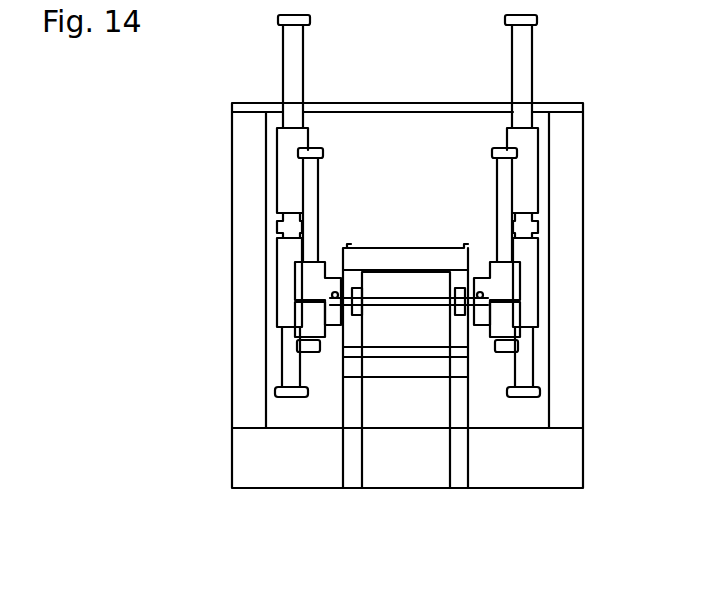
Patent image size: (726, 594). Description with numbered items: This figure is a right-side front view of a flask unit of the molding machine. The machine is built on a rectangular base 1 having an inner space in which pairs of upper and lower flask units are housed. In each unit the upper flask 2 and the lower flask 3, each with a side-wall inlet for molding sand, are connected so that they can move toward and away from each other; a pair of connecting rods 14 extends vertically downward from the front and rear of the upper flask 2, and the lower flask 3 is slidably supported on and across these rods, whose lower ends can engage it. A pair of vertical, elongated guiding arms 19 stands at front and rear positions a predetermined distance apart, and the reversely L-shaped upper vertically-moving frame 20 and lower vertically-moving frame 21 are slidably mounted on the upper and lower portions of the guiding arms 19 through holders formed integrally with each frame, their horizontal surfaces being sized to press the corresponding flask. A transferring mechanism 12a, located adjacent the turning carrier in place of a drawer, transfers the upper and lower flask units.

The base 1 is at (432, 110).
The upper flask 2 is at (293, 268).
The lower flask 3 is at (305, 330).
The transferring mechanism 12a is at (457, 465).
The connecting rods 14 is at (313, 182).
The guiding arms 19 is at (297, 62).
The upper vertically-moving frame 20 is at (283, 185).
The lower vertically-moving frame 21 is at (283, 305).